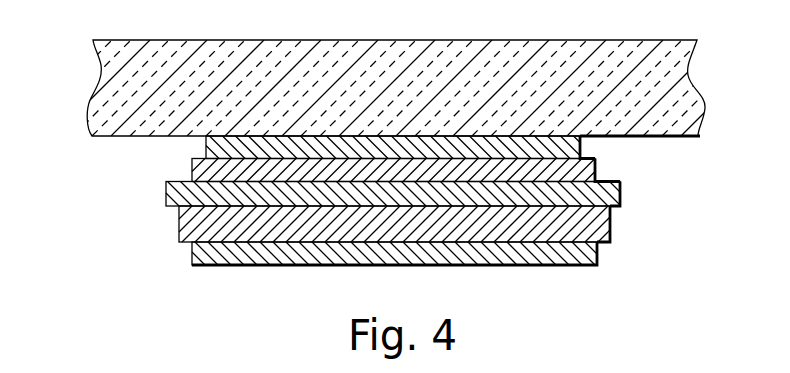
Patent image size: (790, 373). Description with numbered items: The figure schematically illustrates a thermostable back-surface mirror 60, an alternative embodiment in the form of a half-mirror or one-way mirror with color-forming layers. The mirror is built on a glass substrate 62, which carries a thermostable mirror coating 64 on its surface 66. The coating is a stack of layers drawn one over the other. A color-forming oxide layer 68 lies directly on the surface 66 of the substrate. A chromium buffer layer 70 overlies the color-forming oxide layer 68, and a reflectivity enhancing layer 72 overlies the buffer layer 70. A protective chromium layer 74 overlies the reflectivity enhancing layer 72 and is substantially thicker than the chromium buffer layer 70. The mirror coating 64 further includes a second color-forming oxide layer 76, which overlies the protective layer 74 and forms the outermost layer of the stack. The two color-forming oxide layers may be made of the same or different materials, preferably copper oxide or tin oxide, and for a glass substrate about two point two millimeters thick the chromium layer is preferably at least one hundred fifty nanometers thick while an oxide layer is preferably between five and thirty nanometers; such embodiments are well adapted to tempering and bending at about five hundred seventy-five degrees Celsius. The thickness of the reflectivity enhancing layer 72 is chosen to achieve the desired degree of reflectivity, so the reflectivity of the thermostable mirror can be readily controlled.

The thermostable back-surface mirror 60 is at (66, 79).
The glass substrate 62 is at (662, 97).
The thermostable mirror coating 64 is at (85, 143).
The surface 66 is at (682, 137).
The color-forming oxide layer 68 is at (207, 143).
The chromium buffer layer 70 is at (592, 165).
The reflectivity enhancing layer 72 is at (167, 197).
The protective chromium layer 74 is at (605, 220).
The color-forming oxide layer 76 is at (542, 253).